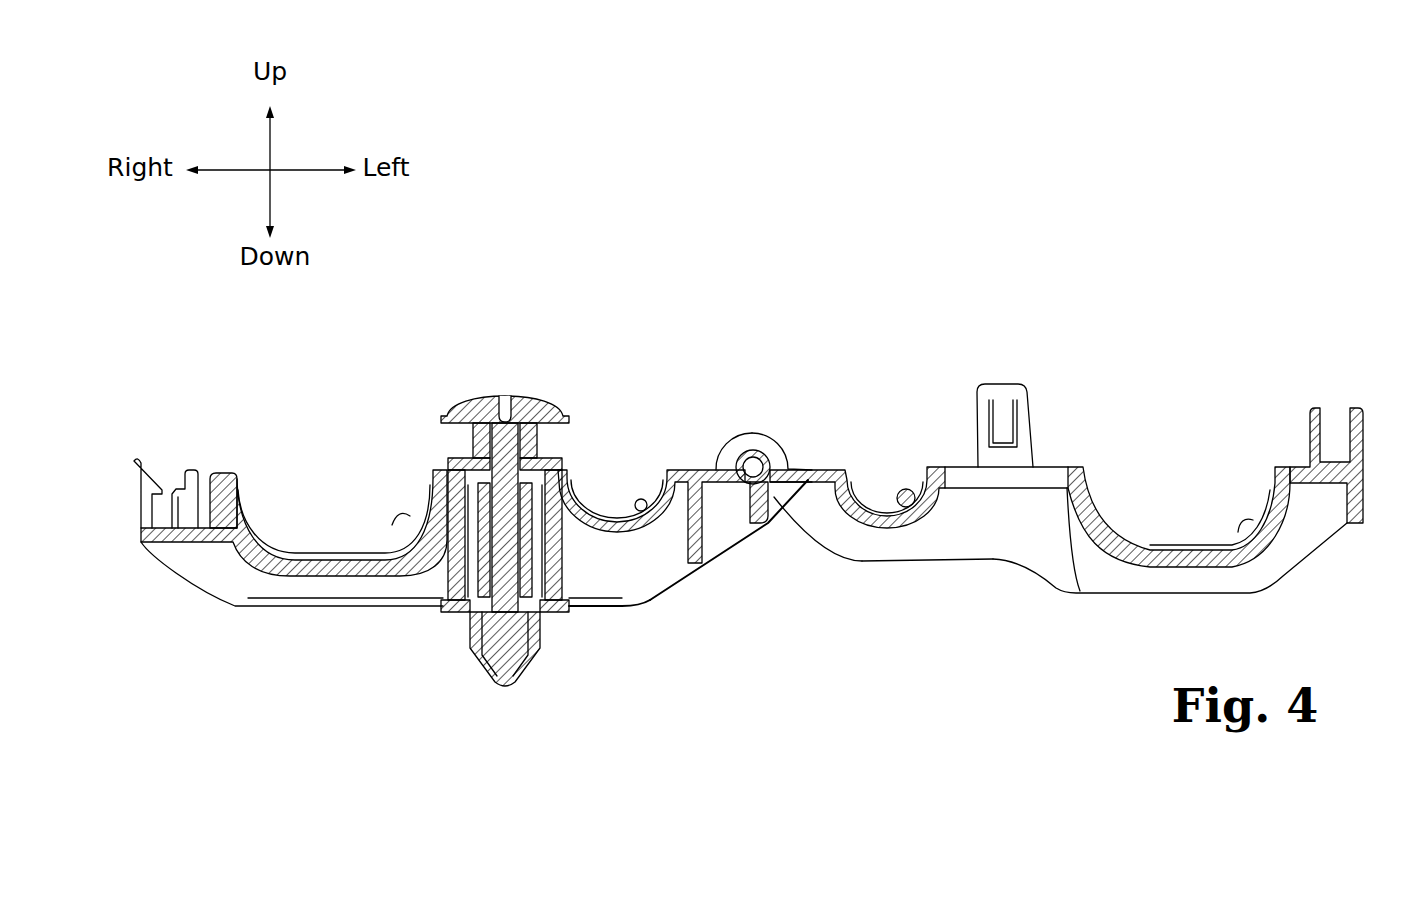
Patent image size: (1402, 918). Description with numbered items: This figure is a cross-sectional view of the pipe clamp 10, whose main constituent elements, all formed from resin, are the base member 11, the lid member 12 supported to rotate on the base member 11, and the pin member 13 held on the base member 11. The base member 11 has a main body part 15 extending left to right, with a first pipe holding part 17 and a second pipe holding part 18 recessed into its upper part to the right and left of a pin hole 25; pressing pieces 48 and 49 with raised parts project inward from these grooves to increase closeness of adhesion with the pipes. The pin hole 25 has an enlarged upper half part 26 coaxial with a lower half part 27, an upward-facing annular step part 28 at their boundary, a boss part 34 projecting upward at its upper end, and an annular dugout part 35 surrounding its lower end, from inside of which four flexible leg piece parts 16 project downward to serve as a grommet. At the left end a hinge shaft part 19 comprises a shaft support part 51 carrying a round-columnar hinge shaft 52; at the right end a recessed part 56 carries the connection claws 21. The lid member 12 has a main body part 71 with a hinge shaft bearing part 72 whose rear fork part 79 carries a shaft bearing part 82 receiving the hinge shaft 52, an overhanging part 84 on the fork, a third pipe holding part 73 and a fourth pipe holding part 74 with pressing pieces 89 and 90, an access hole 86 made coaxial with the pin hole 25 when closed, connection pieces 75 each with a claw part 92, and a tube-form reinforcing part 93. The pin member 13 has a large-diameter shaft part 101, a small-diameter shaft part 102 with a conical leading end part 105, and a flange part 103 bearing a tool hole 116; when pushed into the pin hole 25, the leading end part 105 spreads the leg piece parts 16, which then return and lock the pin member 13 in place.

The pipe clamp 10 is at (567, 278).
The base member 11 is at (324, 368).
The lid member 12 is at (1229, 325).
The pin member 13 is at (551, 385).
The main body part 15 is at (200, 565).
The leg piece parts 16 is at (468, 645).
The first pipe holding part 17 is at (322, 553).
The second pipe holding part 18 is at (605, 515).
The hinge shaft part 19 is at (720, 560).
The connection claws 21 is at (137, 458).
The pin hole 25 is at (474, 448).
The upper half part 26 is at (452, 476).
The lower half part 27 is at (447, 580).
The step part 28 is at (447, 533).
The boss part 34 is at (558, 470).
The dugout part 35 is at (570, 595).
The pressing piece 48 is at (398, 522).
The pressing piece 49 is at (640, 499).
The shaft support part 51 is at (743, 530).
The hinge shaft 52 is at (753, 450).
The recessed part 56 is at (214, 520).
The main body part 71 is at (917, 548).
The hinge shaft bearing part 72 is at (784, 429).
The third pipe holding part 73 is at (1168, 545).
The fourth pipe holding part 74 is at (878, 505).
The connection piece 75 is at (1000, 383).
The rear fork part 79 is at (798, 470).
The shaft bearing part 82 is at (722, 465).
The overhanging part 84 is at (777, 497).
The access hole 86 is at (1000, 490).
The pressing piece 89 is at (1243, 518).
The pressing piece 90 is at (907, 489).
The claw part 92 is at (1005, 430).
The reinforcing part 93 is at (1360, 415).
The large-diameter shaft part 101 is at (478, 430).
The small-diameter shaft part 102 is at (540, 610).
The flange part 103 is at (480, 403).
The leading end part 105 is at (503, 688).
The tool hole 116 is at (502, 398).